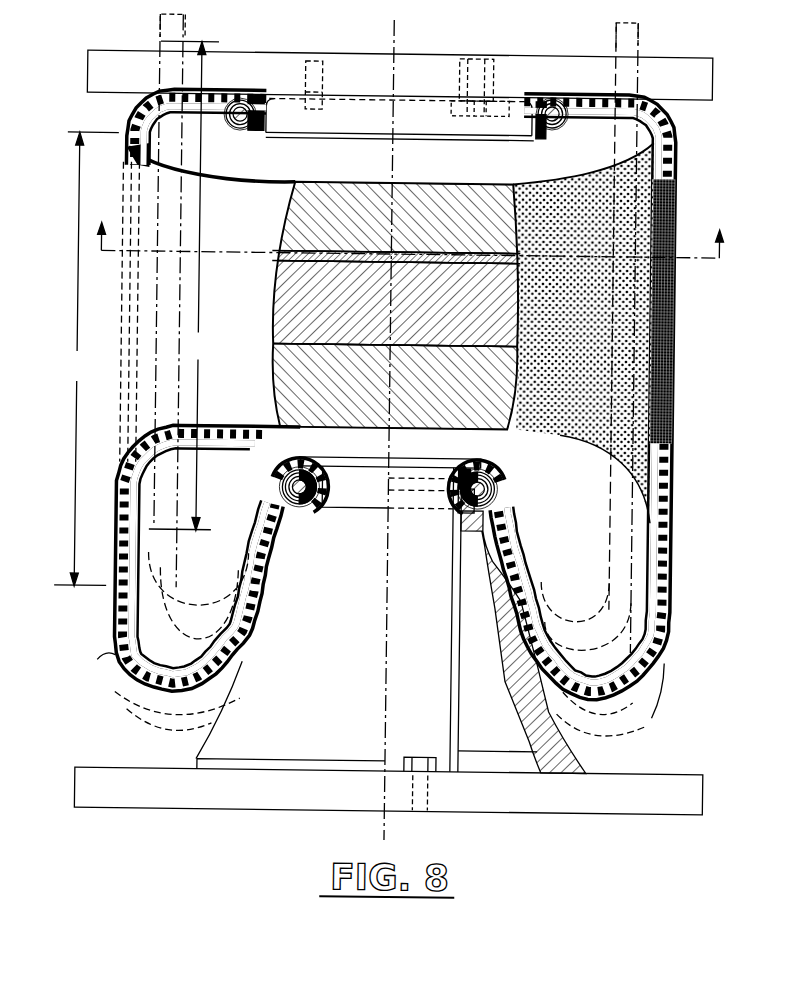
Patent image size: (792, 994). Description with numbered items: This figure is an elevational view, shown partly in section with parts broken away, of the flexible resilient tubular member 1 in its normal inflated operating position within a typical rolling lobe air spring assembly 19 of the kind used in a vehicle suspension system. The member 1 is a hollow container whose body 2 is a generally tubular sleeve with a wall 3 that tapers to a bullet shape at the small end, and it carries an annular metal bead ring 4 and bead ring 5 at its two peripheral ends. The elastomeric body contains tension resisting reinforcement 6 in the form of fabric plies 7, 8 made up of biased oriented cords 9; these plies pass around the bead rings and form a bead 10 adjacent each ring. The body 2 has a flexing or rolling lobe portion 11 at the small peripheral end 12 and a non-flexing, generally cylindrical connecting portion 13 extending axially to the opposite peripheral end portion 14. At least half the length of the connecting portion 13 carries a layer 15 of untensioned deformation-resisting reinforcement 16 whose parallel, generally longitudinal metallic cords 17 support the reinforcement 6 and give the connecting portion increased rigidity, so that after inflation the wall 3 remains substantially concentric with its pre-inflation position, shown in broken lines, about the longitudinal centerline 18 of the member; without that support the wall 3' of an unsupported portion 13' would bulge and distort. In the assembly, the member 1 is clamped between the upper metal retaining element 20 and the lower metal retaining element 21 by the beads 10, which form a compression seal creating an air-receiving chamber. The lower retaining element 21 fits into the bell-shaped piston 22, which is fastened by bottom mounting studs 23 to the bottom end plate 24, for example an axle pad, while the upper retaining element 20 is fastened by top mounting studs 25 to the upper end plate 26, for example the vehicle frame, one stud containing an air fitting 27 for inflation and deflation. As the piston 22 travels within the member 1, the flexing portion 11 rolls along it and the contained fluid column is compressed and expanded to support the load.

The flexible resilient tubular member 1 is at (680, 222).
The body 2 is at (640, 376).
The wall 3 is at (399, 394).
The wall 3' is at (392, 333).
The bead ring 4 is at (240, 100).
The bead ring 5 is at (292, 472).
The tension resisting reinforcement 6 is at (122, 122).
The fabric ply 7 is at (172, 97).
The fabric ply 8 is at (152, 150).
The biased oriented cords 9 is at (490, 315).
The bead 10 is at (240, 108).
The flexing portion 11 is at (130, 695).
The peripheral end 12 is at (456, 492).
The connecting portion 13 is at (86, 359).
The connecting portion 13' is at (184, 286).
The opposite peripheral end portion 14 is at (264, 118).
The layer 15 is at (355, 188).
The deformation-resisting reinforcement 16 is at (120, 158).
The cords 17 is at (484, 232).
The axis 18 is at (389, 74).
The rolling lobe air spring assembly 19 is at (682, 420).
The upper metal retaining element 20 is at (435, 128).
The lower metal retaining element 21 is at (356, 470).
The bell-shaped piston 22 is at (518, 702).
The bottom mounting studs 23 is at (424, 755).
The bottom end plate 24 is at (708, 785).
The top mounting studs 25 is at (318, 62).
The upper end plate 26 is at (710, 90).
The air fitting 27 is at (485, 62).